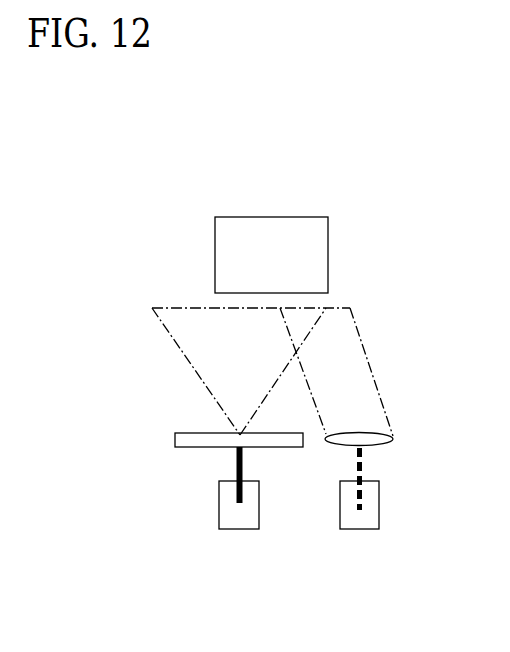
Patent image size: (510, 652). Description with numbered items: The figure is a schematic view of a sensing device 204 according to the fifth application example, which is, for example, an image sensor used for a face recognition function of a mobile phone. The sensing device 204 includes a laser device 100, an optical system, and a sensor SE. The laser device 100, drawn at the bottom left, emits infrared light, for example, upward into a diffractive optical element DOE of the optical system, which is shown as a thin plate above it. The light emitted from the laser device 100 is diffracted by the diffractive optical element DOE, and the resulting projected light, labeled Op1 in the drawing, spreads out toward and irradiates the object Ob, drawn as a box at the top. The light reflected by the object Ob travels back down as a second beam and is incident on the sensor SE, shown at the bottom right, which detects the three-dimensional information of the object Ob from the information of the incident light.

The object Ob is at (277, 217).
The sensing device 204 is at (371, 190).
The projected light pattern Op1 is at (158, 290).
The diffractive optical element DOE is at (175, 442).
The laser device 100 is at (238, 545).
The sensor SE is at (370, 530).